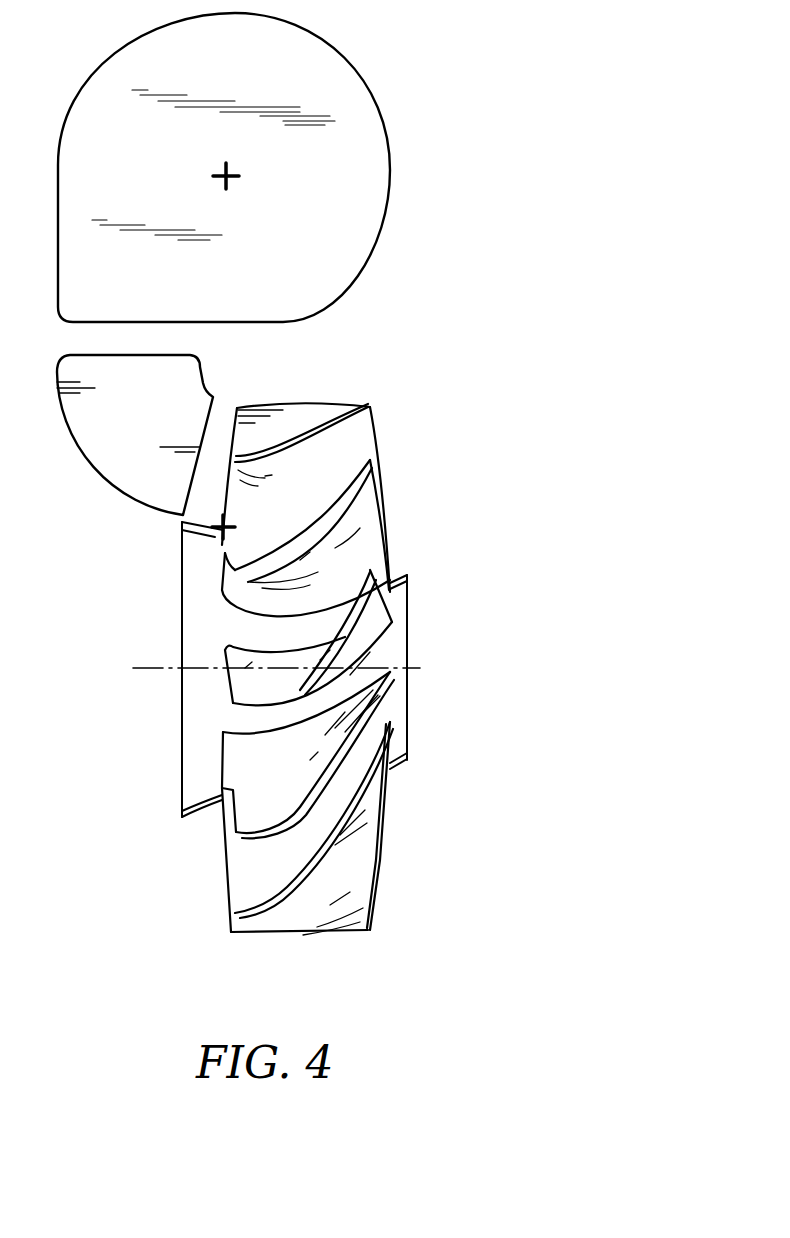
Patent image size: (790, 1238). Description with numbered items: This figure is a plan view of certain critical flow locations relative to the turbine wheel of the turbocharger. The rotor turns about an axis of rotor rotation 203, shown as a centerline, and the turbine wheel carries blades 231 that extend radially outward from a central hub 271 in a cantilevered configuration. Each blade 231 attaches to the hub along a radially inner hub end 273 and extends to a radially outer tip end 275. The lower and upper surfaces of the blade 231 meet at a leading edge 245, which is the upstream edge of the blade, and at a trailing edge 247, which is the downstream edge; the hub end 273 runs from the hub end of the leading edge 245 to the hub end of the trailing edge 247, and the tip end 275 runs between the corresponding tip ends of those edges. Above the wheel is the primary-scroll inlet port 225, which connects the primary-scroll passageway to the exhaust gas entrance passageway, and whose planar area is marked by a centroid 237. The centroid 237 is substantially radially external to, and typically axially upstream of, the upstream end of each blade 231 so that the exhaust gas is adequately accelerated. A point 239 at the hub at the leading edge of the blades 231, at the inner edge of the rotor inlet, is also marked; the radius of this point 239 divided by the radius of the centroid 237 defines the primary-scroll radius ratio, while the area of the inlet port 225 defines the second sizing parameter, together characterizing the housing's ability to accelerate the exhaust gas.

The primary-scroll inlet port 225 is at (390, 157).
The centroid 237 is at (233, 170).
The blade 231 is at (338, 430).
The point at the hub at leading edge of the turbine blades 239 is at (221, 530).
The radially inner hub end 273 is at (225, 647).
The central hub 271 is at (203, 697).
The axis of rotor rotation 203 is at (432, 668).
The leading edge 245 is at (228, 877).
The trailing edge 247 is at (378, 870).
The radially outer tip end 275 is at (287, 935).